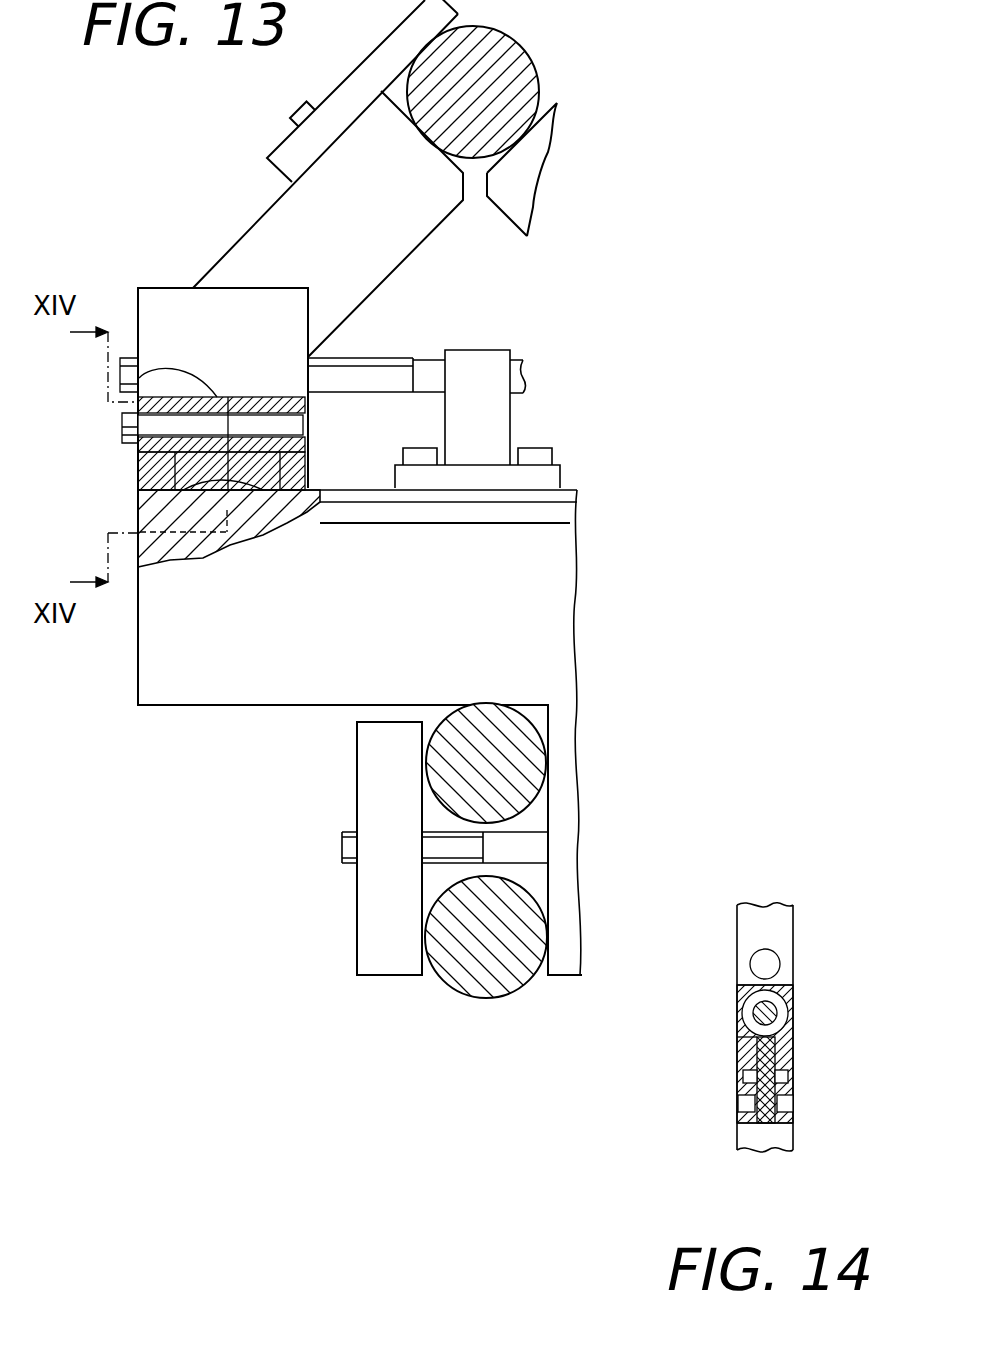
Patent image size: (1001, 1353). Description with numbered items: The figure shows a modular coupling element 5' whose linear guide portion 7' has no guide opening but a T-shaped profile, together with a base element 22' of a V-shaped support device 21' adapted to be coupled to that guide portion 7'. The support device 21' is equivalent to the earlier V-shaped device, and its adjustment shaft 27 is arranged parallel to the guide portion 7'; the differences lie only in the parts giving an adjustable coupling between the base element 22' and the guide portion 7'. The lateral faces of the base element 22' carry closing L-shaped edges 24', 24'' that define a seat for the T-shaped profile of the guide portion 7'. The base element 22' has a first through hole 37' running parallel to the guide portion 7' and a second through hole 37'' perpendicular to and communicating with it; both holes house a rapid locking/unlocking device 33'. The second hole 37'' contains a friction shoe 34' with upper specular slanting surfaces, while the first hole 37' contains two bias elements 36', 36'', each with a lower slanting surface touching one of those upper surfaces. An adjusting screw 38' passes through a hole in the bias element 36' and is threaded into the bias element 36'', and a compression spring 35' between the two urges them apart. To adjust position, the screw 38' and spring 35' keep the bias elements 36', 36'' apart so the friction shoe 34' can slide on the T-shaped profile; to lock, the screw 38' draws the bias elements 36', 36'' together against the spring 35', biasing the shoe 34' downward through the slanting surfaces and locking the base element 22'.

In FIG. 13, the modular coupling element 5' is at (403, 732).
In FIG. 14, the modular coupling element 5' is at (798, 1163).
In FIG. 13, the linear guide portion 7' is at (403, 486).
In FIG. 14, the linear guide portion 7' is at (725, 1141).
In FIG. 13, the V-shaped support device 21' is at (476, 142).
In FIG. 13, the base element 22' is at (295, 359).
In FIG. 14, the base element 22' is at (786, 987).
In FIG. 14, the L-shaped edge 24' is at (693, 1098).
In FIG. 14, the L-shaped edge 24'' is at (835, 1098).
In FIG. 13, the adjustment shaft 27 is at (381, 377).
In FIG. 14, the adjustment shaft 27 is at (755, 960).
In FIG. 13, the rapid locking/unlocking device 33' is at (123, 465).
In FIG. 14, the rapid locking/unlocking device 33' is at (811, 1020).
In FIG. 13, the friction shoe 34' is at (201, 562).
In FIG. 14, the friction shoe 34' is at (821, 1080).
In FIG. 13, the compression spring 35' is at (84, 380).
In FIG. 13, the bias element 36' is at (175, 473).
In FIG. 13, the bias element 36'' is at (265, 418).
In FIG. 14, the bias element 36'' is at (813, 1009).
In FIG. 13, the first through hole 37' is at (257, 463).
In FIG. 14, the first through hole 37' is at (710, 975).
In FIG. 13, the second through hole 37'' is at (174, 530).
In FIG. 14, the second through hole 37'' is at (692, 1054).
In FIG. 13, the adjusting screw 38' is at (166, 429).
In FIG. 14, the adjusting screw 38' is at (696, 1014).